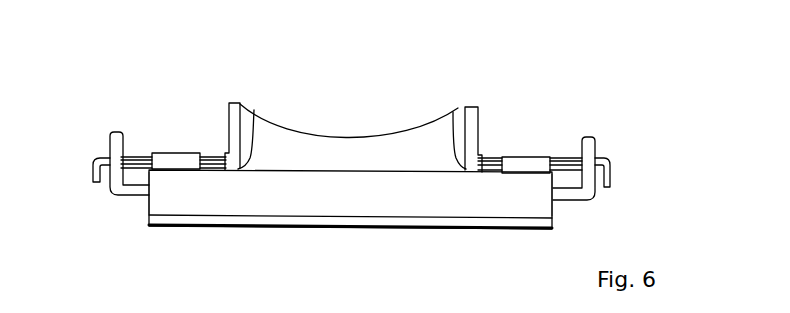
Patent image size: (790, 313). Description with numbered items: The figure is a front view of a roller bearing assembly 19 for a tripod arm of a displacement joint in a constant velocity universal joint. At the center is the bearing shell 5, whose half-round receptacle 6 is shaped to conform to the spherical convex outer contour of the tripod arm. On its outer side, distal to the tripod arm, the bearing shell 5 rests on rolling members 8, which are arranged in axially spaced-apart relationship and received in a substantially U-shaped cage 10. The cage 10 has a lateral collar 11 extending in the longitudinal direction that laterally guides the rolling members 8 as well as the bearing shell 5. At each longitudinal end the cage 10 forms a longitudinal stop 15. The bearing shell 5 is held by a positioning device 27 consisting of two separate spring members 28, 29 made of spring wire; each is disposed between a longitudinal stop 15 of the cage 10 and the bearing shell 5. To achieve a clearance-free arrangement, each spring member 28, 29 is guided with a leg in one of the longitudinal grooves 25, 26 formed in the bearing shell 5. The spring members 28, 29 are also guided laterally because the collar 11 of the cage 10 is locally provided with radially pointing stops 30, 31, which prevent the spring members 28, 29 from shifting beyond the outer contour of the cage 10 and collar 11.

The bearing shell 5 is at (351, 142).
The half-round receptacle 6 is at (288, 123).
The rolling members 8 is at (232, 227).
The cage 10 is at (297, 227).
The collar 11 is at (198, 202).
The longitudinal stop 15 is at (115, 145).
The roller bearing assembly 19 is at (110, 113).
The longitudinal groove 25 is at (254, 112).
The longitudinal groove 26 is at (453, 115).
The positioning device 27 is at (157, 131).
The spring member 28 is at (138, 156).
The spring member 29 is at (565, 157).
The stop 30 is at (183, 155).
The stop 31 is at (522, 157).